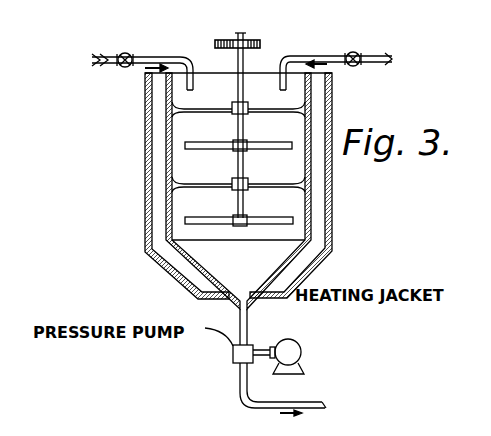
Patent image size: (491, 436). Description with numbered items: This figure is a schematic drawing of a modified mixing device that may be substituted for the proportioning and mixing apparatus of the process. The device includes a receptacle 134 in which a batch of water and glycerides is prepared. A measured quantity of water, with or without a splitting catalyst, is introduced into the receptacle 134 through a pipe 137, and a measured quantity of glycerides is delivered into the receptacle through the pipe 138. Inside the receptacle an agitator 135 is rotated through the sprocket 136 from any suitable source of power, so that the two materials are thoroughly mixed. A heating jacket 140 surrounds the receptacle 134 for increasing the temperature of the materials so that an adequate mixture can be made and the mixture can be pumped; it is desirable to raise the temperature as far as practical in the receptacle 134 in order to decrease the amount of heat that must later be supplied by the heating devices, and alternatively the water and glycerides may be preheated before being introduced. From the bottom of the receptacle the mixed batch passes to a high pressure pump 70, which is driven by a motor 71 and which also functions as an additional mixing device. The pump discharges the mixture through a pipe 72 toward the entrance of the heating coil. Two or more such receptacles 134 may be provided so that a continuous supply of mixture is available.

The receptacle 134 is at (308, 200).
The agitator 135 is at (277, 224).
The sprocket 136 is at (262, 21).
The pipe 137 is at (164, 56).
The pipe 138 is at (318, 55).
The heating jacket 140 is at (307, 283).
The high pressure pump 70 is at (233, 350).
The motor 71 is at (293, 345).
The pipe 72 is at (242, 388).